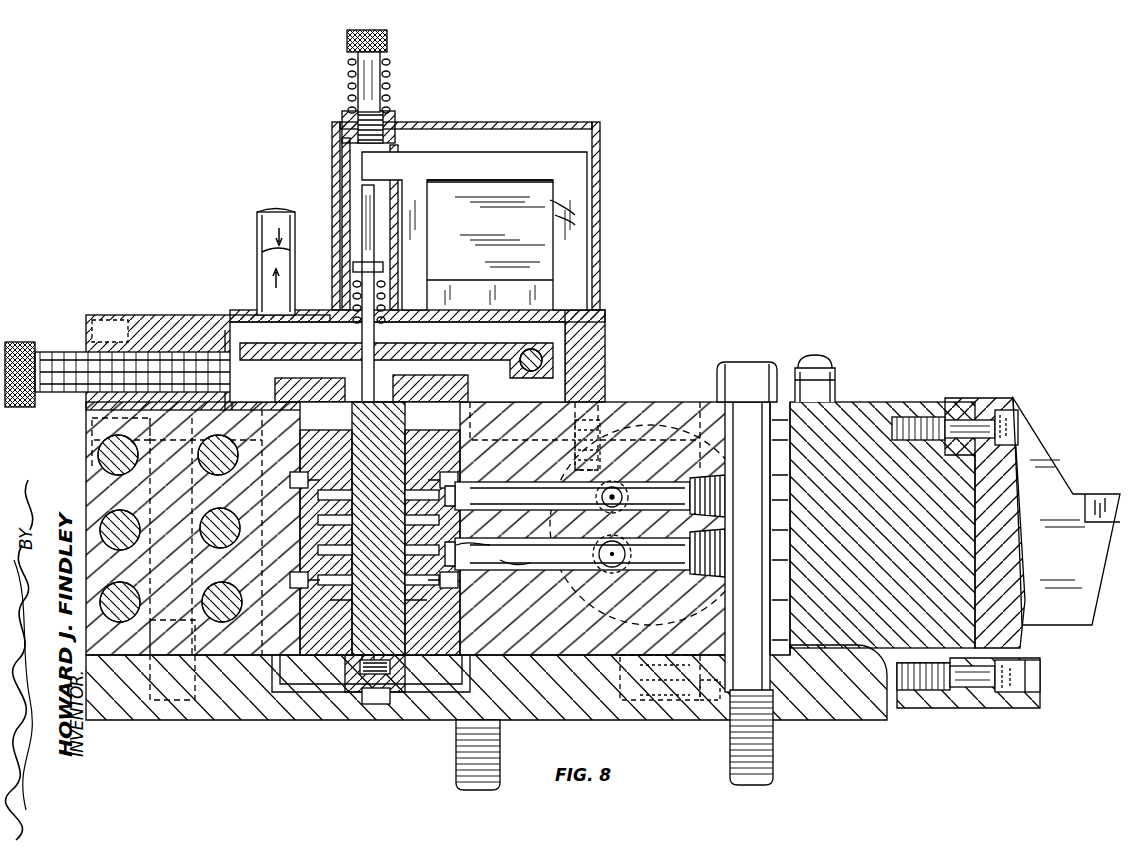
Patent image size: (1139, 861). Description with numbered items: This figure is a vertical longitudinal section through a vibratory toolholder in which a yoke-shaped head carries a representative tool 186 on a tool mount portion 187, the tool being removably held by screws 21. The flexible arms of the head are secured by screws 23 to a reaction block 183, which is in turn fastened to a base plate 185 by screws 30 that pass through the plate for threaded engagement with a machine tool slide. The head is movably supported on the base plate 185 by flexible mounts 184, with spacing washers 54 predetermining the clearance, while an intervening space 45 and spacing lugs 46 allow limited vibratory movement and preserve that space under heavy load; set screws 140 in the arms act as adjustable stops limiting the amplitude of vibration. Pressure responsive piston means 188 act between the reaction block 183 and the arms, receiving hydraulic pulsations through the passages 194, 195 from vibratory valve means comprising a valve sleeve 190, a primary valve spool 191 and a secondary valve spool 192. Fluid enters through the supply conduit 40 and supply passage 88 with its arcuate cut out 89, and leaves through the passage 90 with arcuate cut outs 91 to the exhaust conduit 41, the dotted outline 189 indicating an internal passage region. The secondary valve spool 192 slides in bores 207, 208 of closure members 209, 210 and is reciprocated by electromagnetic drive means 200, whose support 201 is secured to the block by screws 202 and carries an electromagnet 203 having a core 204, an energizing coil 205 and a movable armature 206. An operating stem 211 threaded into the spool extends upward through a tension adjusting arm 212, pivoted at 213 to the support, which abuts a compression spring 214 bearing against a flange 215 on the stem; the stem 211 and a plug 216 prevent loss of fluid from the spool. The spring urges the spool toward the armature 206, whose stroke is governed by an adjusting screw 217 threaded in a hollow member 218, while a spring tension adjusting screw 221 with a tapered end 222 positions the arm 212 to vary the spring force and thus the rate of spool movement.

The screws 21 is at (1018, 416).
The screws 23 is at (98, 510).
The screws 30 is at (745, 364).
The supply conduit 40 is at (258, 222).
The exhaust conduit 41 is at (260, 265).
The intervening space 45 is at (650, 720).
The spacing lug 46 is at (718, 720).
The spacing washers 54 is at (862, 402).
The supply passage 88 is at (318, 550).
The arcuate cut out 89 is at (318, 495).
The passage 90 is at (305, 600).
The arcuate cut outs 91 is at (290, 480).
The set screws 140 is at (665, 582).
The reaction block 183 is at (680, 405).
The flexible mounts 184 is at (815, 360).
The base plate 185 is at (244, 720).
The tool 186 is at (1038, 465).
The tool mount portion 187 is at (930, 390).
The pressure responsive piston means 188 is at (618, 420).
The passage 189 is at (658, 425).
The valve sleeve 190 is at (300, 625).
The primary valve spool 191 is at (350, 650).
The secondary valve spool 192 is at (488, 565).
The passage 194 is at (512, 486).
The passage 195 is at (520, 572).
The electromagnetic drive means 200 is at (606, 334).
The support 201 is at (150, 315).
The screws 202 is at (135, 315).
The electromagnet 203 is at (578, 184).
The core 204 is at (582, 275).
The energizing coil 205 is at (455, 185).
The armature 206 is at (527, 155).
The bore 207 is at (410, 692).
The bore 208 is at (388, 392).
The closure member 209 is at (318, 692).
The closure member 210 is at (445, 372).
The operating stem 211 is at (362, 195).
The tension adjusting arm 212 is at (258, 318).
The pivot 213 is at (530, 372).
The compression spring 214 is at (354, 300).
The flange 215 is at (356, 262).
The plug 216 is at (375, 676).
The adjusting screw 217 is at (388, 46).
The hollow member 218 is at (345, 155).
The spring tension adjusting screw 221 is at (52, 352).
The tapered end 222 is at (215, 318).